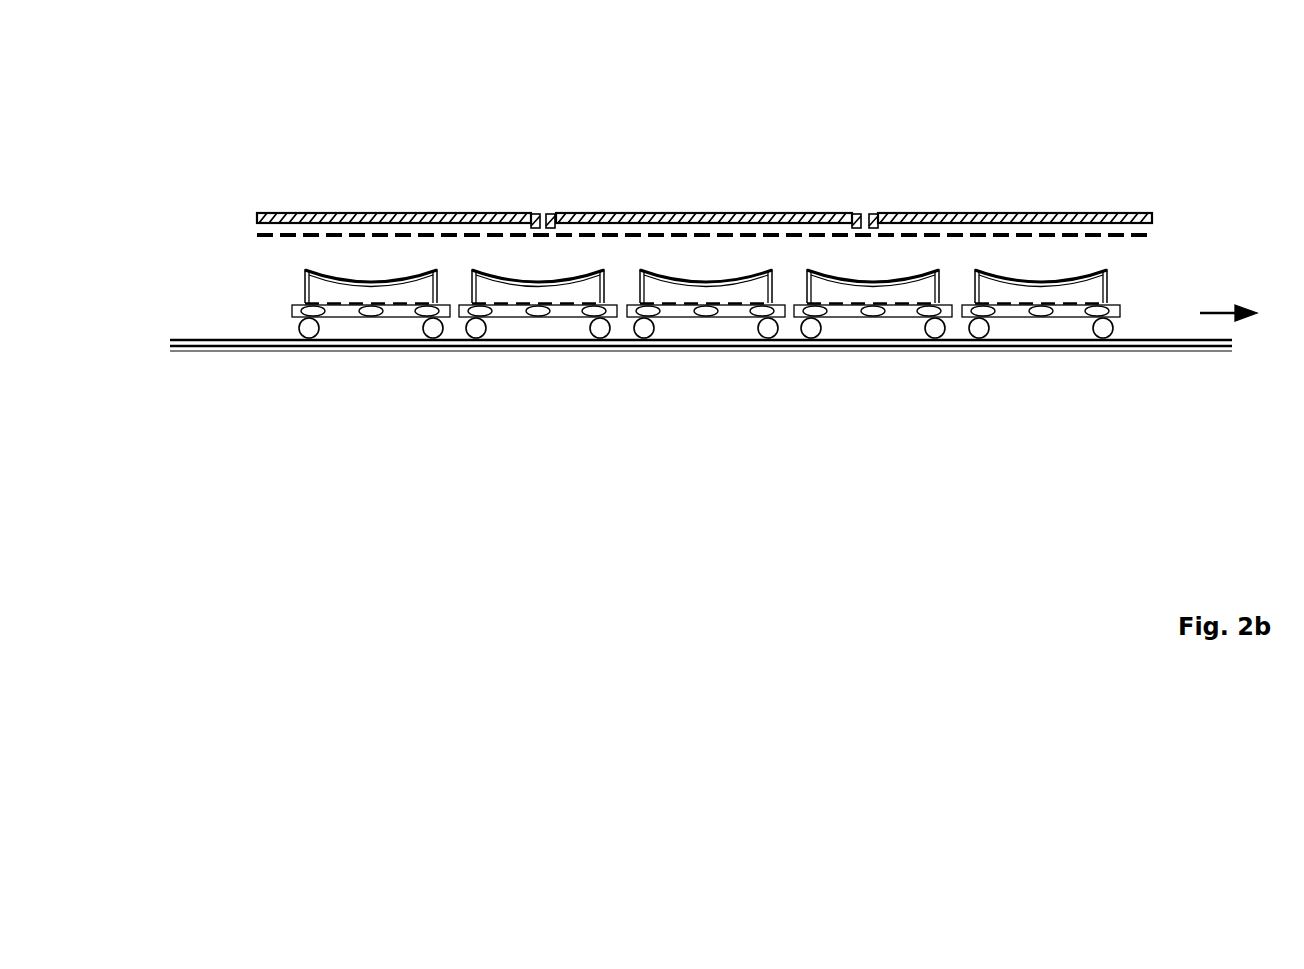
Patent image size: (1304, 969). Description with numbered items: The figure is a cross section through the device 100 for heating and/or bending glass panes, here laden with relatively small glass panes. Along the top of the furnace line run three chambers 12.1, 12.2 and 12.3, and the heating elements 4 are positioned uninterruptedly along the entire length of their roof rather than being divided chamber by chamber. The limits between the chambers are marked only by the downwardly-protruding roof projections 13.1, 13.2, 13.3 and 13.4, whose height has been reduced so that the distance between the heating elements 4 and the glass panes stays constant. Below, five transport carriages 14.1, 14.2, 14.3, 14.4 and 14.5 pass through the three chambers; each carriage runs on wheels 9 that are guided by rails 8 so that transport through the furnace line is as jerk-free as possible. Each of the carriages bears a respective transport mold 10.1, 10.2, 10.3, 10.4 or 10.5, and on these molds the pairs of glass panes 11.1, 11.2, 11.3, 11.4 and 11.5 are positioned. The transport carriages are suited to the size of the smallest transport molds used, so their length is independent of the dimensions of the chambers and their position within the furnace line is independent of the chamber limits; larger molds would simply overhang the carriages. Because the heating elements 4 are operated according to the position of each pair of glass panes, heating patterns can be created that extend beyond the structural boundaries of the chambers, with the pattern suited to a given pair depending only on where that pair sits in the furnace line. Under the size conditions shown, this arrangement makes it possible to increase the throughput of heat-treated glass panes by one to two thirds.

The device 100 is at (684, 162).
The heating elements 4 is at (318, 238).
The rails 8 is at (220, 340).
The wheels 9 is at (307, 330).
The transport mold 10.1 is at (425, 283).
The transport mold 10.2 is at (592, 283).
The transport mold 10.3 is at (762, 283).
The transport mold 10.4 is at (927, 283).
The transport mold 10.5 is at (1097, 283).
The pair of glass panes 11.1 is at (371, 283).
The pair of glass panes 11.2 is at (538, 283).
The pair of glass panes 11.3 is at (706, 283).
The pair of glass panes 11.4 is at (873, 283).
The pair of glass panes 11.5 is at (1041, 283).
The chamber 12.1 is at (357, 213).
The chamber 12.2 is at (655, 213).
The chamber 12.3 is at (1030, 213).
The roof projection 13.1 is at (533, 213).
The roof projection 13.2 is at (551, 213).
The roof projection 13.3 is at (856, 213).
The roof projection 13.4 is at (874, 213).
The transport carriage 14.1 is at (390, 313).
The transport carriage 14.2 is at (557, 313).
The transport carriage 14.3 is at (728, 313).
The transport carriage 14.4 is at (892, 313).
The transport carriage 14.5 is at (1062, 313).